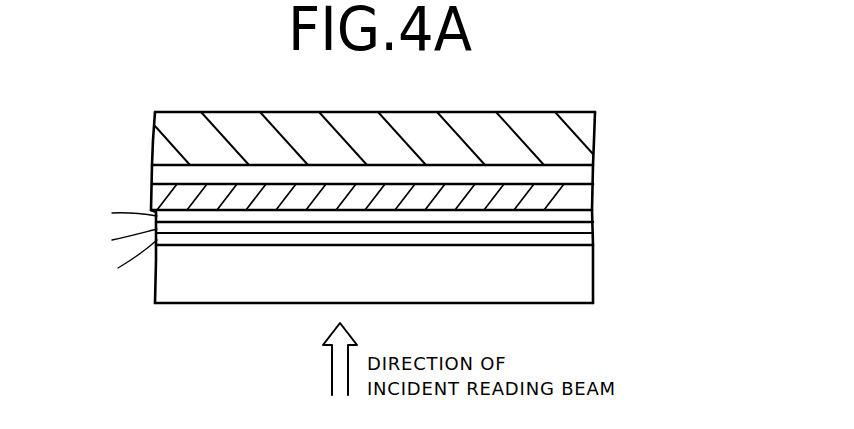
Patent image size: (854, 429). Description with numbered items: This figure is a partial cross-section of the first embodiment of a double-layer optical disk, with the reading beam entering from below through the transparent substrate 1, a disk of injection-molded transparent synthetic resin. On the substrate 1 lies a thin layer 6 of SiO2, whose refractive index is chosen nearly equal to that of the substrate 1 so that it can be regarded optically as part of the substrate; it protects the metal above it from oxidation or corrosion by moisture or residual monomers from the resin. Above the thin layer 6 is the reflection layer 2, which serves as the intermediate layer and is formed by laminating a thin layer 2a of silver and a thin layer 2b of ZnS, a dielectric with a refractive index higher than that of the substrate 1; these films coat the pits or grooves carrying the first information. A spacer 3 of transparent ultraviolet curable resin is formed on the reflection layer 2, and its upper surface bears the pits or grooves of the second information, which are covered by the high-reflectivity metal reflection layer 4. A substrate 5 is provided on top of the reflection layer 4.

The transparent substrate 1 is at (593, 285).
The reflection layer 2 is at (409, 228).
The thin film of metal 2a is at (593, 229).
The thin film of dielectric material 2b is at (593, 214).
The spacer 3 is at (588, 203).
The reflection layer 4 is at (587, 176).
The substrate 5 is at (585, 137).
The thin layer 6 is at (593, 239).